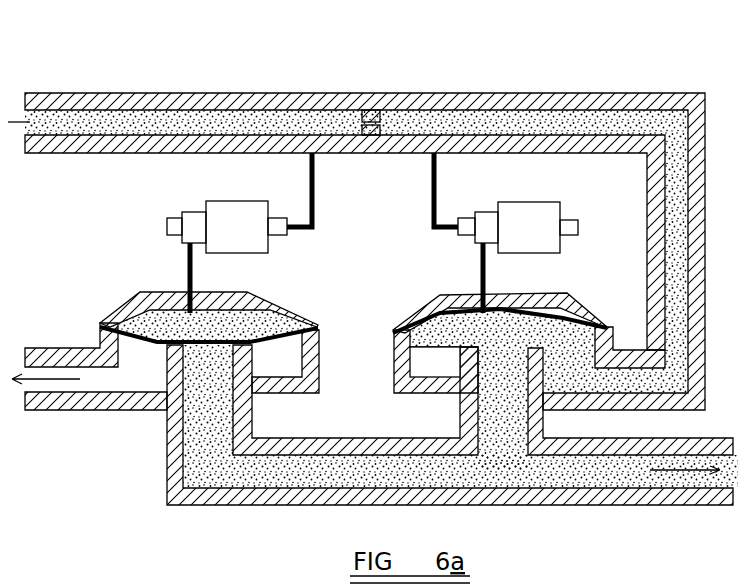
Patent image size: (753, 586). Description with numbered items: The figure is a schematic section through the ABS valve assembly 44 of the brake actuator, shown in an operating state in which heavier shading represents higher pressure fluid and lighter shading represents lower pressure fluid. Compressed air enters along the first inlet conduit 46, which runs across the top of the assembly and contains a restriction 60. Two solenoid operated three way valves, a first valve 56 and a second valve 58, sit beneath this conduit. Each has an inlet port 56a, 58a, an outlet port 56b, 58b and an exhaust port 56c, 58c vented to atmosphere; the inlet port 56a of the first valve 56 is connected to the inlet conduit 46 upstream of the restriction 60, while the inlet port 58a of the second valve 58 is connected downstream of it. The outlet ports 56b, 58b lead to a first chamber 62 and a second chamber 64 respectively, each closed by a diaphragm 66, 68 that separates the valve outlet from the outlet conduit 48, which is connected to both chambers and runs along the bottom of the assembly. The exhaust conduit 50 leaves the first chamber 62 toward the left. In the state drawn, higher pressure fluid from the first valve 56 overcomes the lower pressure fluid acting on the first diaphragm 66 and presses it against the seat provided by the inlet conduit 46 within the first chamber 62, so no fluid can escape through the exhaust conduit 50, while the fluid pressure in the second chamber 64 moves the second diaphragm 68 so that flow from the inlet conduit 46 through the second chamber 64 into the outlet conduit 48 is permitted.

The ABS valve assembly 44 is at (643, 58).
The first inlet conduit 46 is at (116, 125).
The outlet conduit 48 is at (627, 503).
The exhaust conduit 50 is at (112, 398).
The first three way valve 56 is at (195, 207).
The inlet port of first valve 56a is at (287, 233).
The outlet port of first valve 56b is at (190, 243).
The exhaust port of first valve 56c is at (167, 233).
The second three way valve 58 is at (524, 262).
The inlet port of second valve 58a is at (459, 217).
The outlet port of second valve 58b is at (483, 243).
The exhaust port of second valve 58c is at (568, 220).
The restriction 60 is at (368, 110).
The first chamber 62 is at (312, 360).
The second chamber 64 is at (608, 317).
The first diaphragm 66 is at (250, 293).
The second diaphragm 68 is at (522, 298).